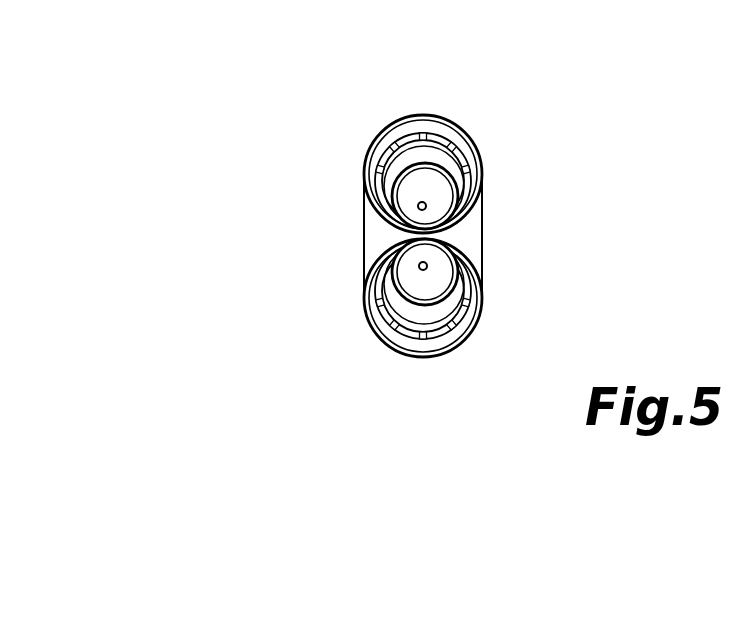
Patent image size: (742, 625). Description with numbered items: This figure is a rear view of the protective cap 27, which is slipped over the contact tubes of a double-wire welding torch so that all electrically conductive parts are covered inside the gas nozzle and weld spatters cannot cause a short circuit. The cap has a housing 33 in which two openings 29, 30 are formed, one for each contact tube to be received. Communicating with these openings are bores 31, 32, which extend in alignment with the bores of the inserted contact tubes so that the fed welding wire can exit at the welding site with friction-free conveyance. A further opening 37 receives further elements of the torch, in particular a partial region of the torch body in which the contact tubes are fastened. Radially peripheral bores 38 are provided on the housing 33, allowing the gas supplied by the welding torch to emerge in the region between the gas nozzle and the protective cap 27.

The protective cap 27 is at (493, 103).
The opening 29 is at (436, 194).
The opening 30 is at (437, 283).
The bore 31 is at (418, 204).
The bore 32 is at (419, 268).
The housing 33 is at (376, 236).
The further opening 37 is at (383, 138).
The bores 38 is at (462, 146).